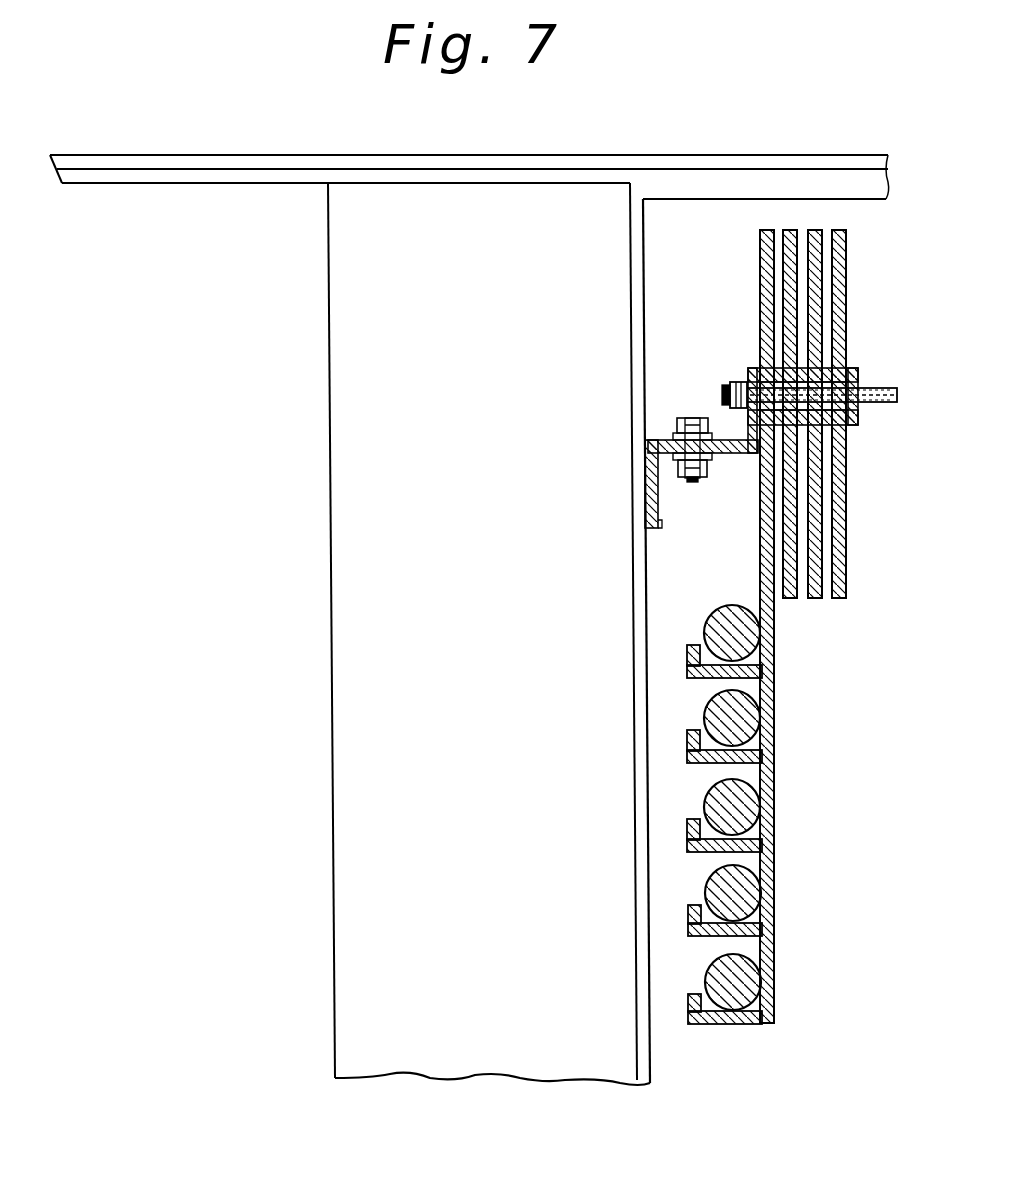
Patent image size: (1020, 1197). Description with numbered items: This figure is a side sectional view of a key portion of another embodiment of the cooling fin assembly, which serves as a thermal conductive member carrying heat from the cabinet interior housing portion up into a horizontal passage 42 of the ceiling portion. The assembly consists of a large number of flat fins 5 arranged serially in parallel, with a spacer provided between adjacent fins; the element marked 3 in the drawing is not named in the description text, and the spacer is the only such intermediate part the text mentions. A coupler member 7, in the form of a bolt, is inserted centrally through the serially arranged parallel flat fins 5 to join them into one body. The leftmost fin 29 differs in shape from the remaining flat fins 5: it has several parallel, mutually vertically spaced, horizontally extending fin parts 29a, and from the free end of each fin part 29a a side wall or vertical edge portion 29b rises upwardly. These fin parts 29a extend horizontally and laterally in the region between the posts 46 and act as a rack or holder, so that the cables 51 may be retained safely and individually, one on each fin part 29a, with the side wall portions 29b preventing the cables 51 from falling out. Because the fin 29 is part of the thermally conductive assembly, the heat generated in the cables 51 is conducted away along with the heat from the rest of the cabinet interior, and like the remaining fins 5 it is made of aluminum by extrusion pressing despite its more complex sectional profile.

The horizontal passage 42 is at (721, 230).
The posts 46 is at (475, 1045).
The fin 29 is at (760, 543).
The fin parts 29a is at (710, 926).
The side wall portions 29b is at (688, 912).
The flat fins 5 is at (790, 600).
The clamp / insulating holder 3 is at (772, 428).
The coupler member 7 is at (885, 386).
The cables 51 is at (710, 717).